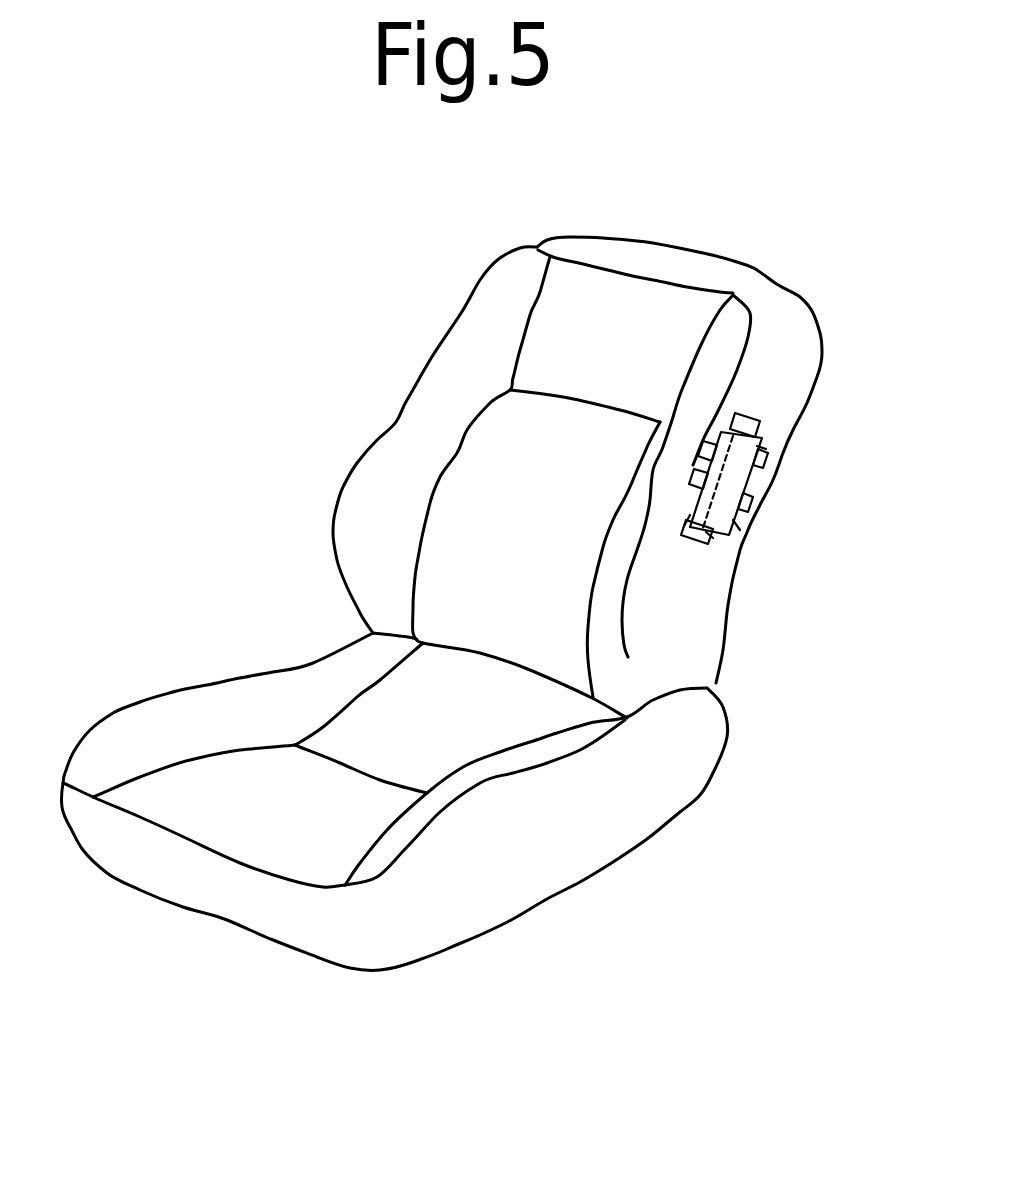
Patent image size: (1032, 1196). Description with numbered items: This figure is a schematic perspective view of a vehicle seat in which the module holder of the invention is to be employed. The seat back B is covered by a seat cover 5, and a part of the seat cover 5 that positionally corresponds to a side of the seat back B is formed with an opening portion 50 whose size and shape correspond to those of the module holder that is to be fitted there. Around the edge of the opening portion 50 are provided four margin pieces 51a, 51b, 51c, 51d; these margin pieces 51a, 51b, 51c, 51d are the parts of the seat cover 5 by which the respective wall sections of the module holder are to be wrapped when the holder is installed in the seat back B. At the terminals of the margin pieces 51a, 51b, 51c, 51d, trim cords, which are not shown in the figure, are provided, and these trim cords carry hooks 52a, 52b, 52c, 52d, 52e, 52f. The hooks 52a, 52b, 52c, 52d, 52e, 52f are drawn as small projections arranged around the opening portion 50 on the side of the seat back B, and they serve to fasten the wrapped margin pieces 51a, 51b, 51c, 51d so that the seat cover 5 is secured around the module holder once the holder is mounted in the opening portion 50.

The seat cover 5 is at (743, 278).
The seat back B is at (412, 393).
The opening portion 50 is at (723, 487).
The margin piece 51a is at (683, 523).
The margin piece 51b is at (730, 518).
The margin piece 51c is at (757, 445).
The margin piece 51d is at (712, 535).
The hook 52a is at (700, 445).
The hook 52b is at (675, 487).
The hook 52c is at (760, 480).
The hook 52d is at (742, 513).
The hook 52e is at (737, 430).
The hook 52f is at (707, 540).